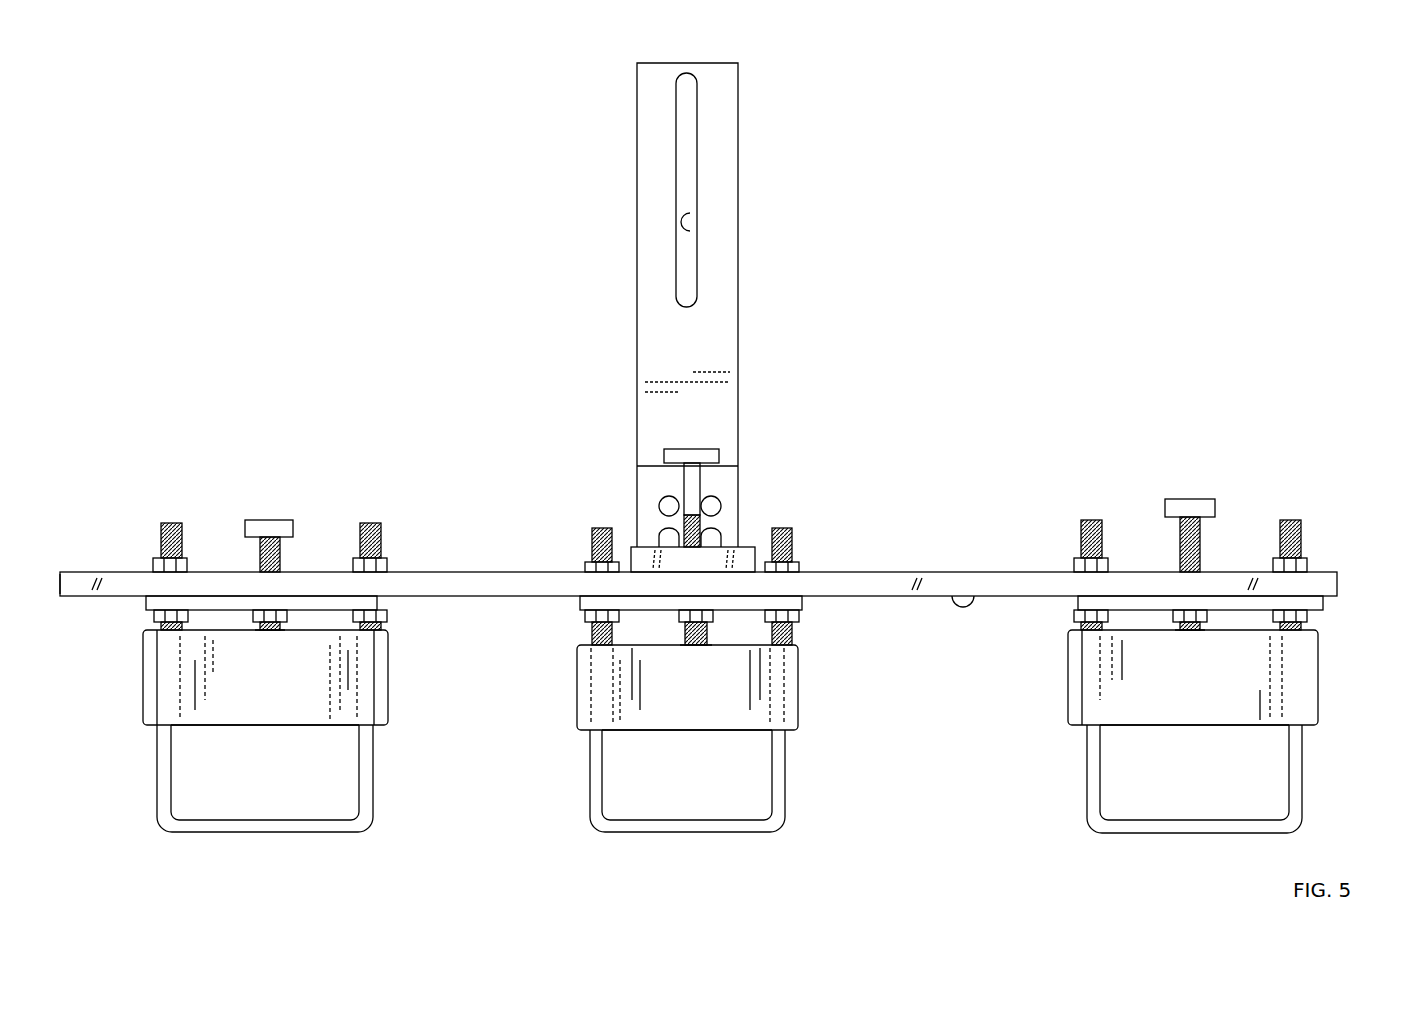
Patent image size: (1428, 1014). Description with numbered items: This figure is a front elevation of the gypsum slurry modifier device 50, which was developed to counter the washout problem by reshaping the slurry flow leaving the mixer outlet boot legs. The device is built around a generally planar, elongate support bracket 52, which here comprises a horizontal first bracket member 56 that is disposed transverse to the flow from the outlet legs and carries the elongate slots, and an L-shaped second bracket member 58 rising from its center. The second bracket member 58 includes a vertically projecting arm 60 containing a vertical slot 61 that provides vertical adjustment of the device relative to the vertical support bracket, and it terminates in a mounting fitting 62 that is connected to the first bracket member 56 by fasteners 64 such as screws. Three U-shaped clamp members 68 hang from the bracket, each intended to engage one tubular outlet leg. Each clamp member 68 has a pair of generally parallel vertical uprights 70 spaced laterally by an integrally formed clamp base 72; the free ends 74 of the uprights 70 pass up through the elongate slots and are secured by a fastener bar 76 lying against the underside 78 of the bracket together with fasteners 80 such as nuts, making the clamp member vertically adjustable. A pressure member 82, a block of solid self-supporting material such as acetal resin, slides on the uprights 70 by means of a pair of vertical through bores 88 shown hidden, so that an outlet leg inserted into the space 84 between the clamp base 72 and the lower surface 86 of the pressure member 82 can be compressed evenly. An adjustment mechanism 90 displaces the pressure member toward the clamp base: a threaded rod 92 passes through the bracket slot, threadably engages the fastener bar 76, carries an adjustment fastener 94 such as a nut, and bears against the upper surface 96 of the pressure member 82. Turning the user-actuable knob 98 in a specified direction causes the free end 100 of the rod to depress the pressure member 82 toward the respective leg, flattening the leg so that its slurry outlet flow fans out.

The gypsum slurry modifier device 50 is at (1040, 238).
The support bracket 52 is at (68, 572).
The first bracket member 56 is at (860, 577).
The second bracket member 58 is at (745, 333).
The vertically projecting arm 60 is at (680, 63).
The vertical slot 61 is at (697, 232).
The mounting fitting 62 is at (730, 493).
The fasteners 64 is at (659, 505).
The clamp member 68 is at (385, 810).
The vertical uprights 70 is at (157, 782).
The clamp base 72 is at (270, 832).
The free ends 74 is at (372, 520).
The fastener bar 76 is at (378, 607).
The underside 78 is at (955, 595).
The fasteners 80 is at (387, 565).
The pressure member 82 is at (143, 688).
The space 84 is at (279, 781).
The lower surface 86 is at (310, 728).
The vertical through bores 88 is at (386, 692).
The adjustment mechanism 90 is at (273, 492).
The threaded rod 92 is at (284, 552).
The adjustment fastener 94 is at (280, 633).
The upper surface 96 is at (230, 630).
The user-actuable knob 98 is at (720, 457).
The free end 100 is at (273, 635).